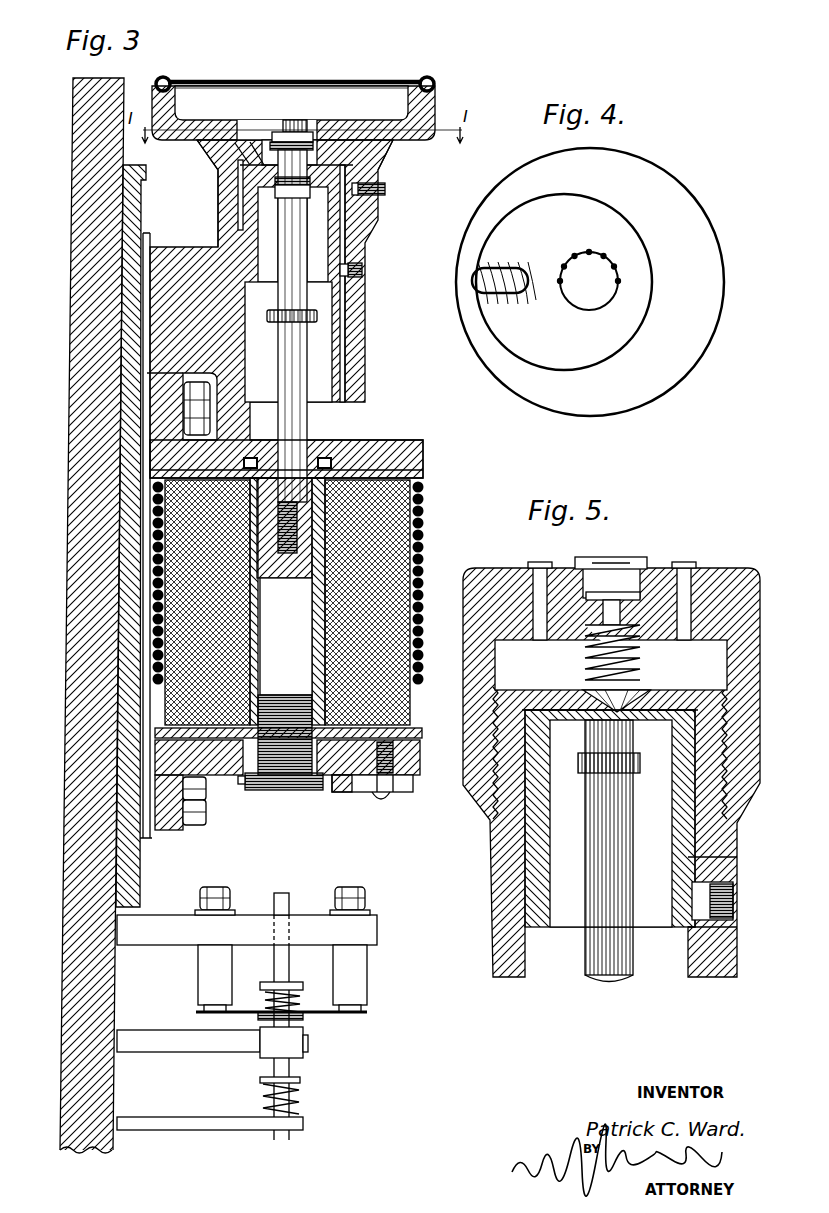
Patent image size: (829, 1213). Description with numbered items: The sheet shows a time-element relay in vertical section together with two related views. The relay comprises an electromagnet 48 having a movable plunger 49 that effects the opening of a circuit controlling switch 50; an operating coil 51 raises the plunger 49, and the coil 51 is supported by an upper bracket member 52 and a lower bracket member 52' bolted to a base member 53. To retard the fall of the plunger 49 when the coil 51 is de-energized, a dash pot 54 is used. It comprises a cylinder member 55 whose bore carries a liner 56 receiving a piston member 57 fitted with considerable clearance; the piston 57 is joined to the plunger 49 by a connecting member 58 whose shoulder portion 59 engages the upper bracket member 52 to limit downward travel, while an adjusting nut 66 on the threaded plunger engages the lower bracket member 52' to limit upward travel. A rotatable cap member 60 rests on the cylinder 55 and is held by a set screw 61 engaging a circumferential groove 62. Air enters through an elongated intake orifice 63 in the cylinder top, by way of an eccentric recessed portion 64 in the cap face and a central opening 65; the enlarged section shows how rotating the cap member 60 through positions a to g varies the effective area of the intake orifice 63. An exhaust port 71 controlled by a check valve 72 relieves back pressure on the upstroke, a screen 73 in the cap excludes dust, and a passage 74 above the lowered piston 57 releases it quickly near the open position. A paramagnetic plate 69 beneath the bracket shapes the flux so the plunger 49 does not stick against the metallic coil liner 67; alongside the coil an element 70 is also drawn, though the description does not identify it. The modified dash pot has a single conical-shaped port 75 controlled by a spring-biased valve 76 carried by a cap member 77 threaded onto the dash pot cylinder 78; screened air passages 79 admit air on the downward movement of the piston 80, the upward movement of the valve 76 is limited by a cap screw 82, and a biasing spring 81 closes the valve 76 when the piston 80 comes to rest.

In FIG. 3, the electromagnet 48 is at (307, 601).
In FIG. 3, the plunger 49 is at (290, 787).
In FIG. 3, the circuit controlling switch 50 is at (345, 1054).
In FIG. 3, the operating coil 51 is at (398, 615).
In FIG. 3, the upper bracket member 52 is at (296, 443).
In FIG. 3, the lower bracket member 52' is at (302, 721).
In FIG. 3, the base member 53 is at (140, 867).
In FIG. 3, the dash pot 54 is at (407, 231).
In FIG. 3, the cylinder member 55 is at (355, 332).
In FIG. 3, the liner 56 is at (342, 351).
In FIG. 3, the piston member 57 is at (268, 280).
In FIG. 3, the connecting member 58 is at (278, 330).
In FIG. 3, the shoulder portion 59 is at (313, 312).
In FIG. 3, the rotatable cap member 60 is at (435, 107).
In FIG. 3, the set screw 61 is at (385, 189).
In FIG. 3, the groove 62 is at (225, 193).
In FIG. 3, the intake orifice 63 is at (240, 143).
In FIG. 4, the intake orifice 63 is at (500, 296).
In FIG. 3, the recessed portion 64 is at (258, 140).
In FIG. 4, the recessed portion 64 is at (592, 196).
In FIG. 3, the central opening 65 is at (297, 120).
In FIG. 4, the central opening 65 is at (600, 300).
In FIG. 3, the adjusting nut 66 is at (320, 790).
In FIG. 3, the coil liner 67 is at (325, 460).
In FIG. 3, the plate 69 is at (403, 792).
In FIG. 3, the spring 70 is at (422, 550).
In FIG. 3, the exhaust port 71 is at (377, 152).
In FIG. 3, the check valve 72 is at (307, 133).
In FIG. 3, the screen 73 is at (320, 84).
In FIG. 3, the passage 74 is at (365, 270).
In FIG. 5, the conical-shaped port 75 is at (645, 693).
In FIG. 5, the spring-biased valve 76 is at (573, 671).
In FIG. 5, the cap member 77 is at (720, 578).
In FIG. 5, the dash pot cylinder 78 is at (495, 838).
In FIG. 5, the screened air passages 79 is at (545, 567).
In FIG. 5, the piston 80 is at (540, 822).
In FIG. 5, the biasing spring 81 is at (640, 668).
In FIG. 5, the cap screw 82 is at (620, 558).